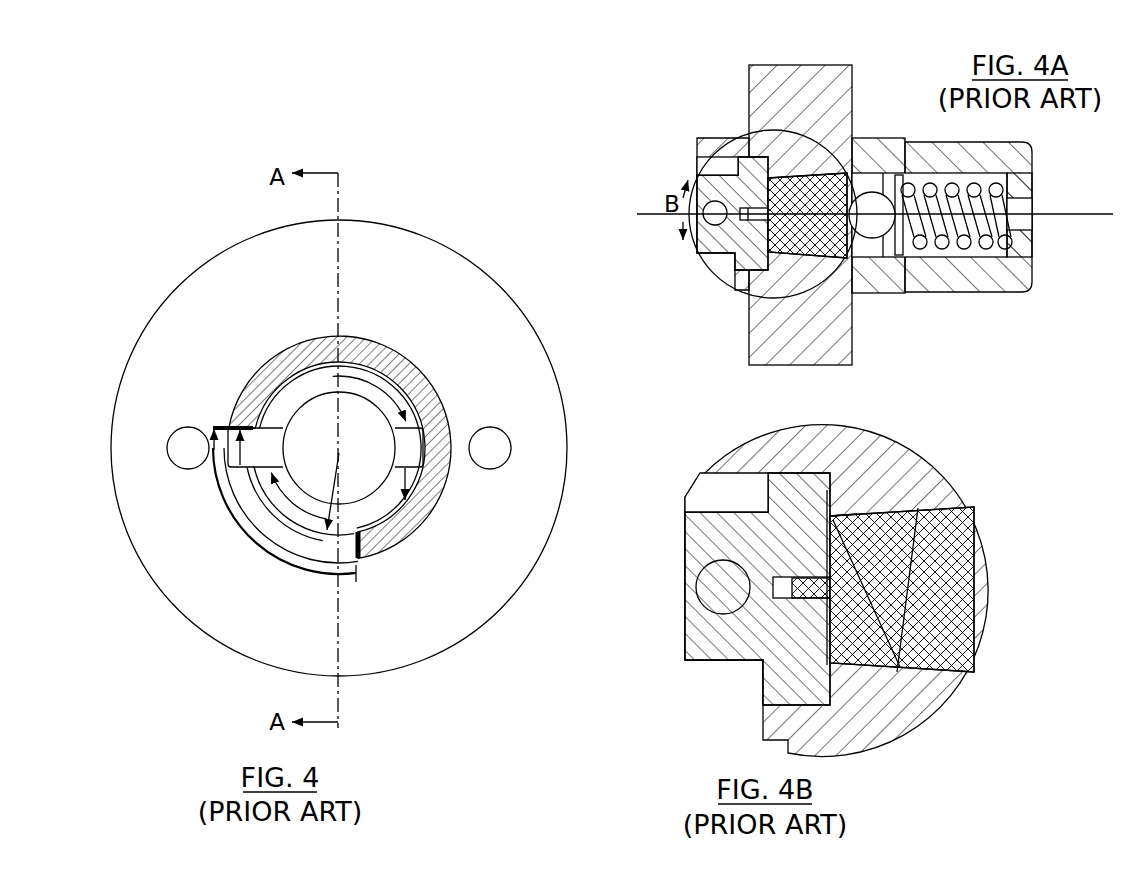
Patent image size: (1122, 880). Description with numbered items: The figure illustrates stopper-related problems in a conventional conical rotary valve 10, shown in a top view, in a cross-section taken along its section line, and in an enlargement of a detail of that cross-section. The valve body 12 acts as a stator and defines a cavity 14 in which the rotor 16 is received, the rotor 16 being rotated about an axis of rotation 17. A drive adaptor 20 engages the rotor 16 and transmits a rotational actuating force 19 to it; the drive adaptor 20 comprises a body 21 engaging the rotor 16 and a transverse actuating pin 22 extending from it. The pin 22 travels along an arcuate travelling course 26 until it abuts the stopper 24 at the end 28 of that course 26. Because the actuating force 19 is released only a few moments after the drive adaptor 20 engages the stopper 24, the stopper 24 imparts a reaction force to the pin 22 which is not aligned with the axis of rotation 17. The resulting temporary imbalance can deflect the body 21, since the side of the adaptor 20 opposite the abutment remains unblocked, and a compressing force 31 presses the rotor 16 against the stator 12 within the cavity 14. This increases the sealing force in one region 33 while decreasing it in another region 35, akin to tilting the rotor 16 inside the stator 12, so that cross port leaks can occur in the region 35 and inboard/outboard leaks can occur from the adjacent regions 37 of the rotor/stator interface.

In FIG. 4, the conical rotary valve 10 is at (390, 188).
In FIG. 4A, the valve body 12 is at (838, 343).
In FIG. 4B, the valve body 12 is at (903, 465).
In FIG. 4B, the cavity 14 is at (980, 496).
In FIG. 4A, the rotor 16 is at (807, 202).
In FIG. 4B, the rotor 16 is at (957, 550).
In FIG. 4A, the axis of rotation 17 is at (1063, 216).
In FIG. 4, the rotational actuating force 19 is at (431, 375).
In FIG. 4, the drive adaptor 20 is at (374, 500).
In FIG. 4A, the drive adaptor 20 is at (709, 243).
In FIG. 4B, the drive adaptor 20 is at (713, 645).
In FIG. 4, the body 21 is at (366, 396).
In FIG. 4, the actuating pin 22 is at (250, 459).
In FIG. 4B, the actuating pin 22 is at (722, 586).
In FIG. 4, the stopper 24 is at (282, 357).
In FIG. 4, the arcuate travelling course 26 is at (226, 508).
In FIG. 4, the end of course 28 is at (213, 426).
In FIG. 4, the compressing force 31 is at (326, 535).
In FIG. 4B, the region of increased sealing force 33 is at (899, 660).
In FIG. 4B, the region of decreased sealing force 35 is at (867, 518).
In FIG. 4B, the regions of inboard/outboard leaks 37 is at (830, 514).